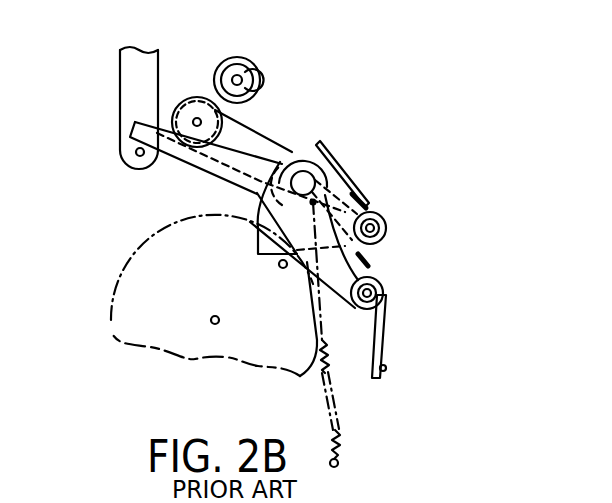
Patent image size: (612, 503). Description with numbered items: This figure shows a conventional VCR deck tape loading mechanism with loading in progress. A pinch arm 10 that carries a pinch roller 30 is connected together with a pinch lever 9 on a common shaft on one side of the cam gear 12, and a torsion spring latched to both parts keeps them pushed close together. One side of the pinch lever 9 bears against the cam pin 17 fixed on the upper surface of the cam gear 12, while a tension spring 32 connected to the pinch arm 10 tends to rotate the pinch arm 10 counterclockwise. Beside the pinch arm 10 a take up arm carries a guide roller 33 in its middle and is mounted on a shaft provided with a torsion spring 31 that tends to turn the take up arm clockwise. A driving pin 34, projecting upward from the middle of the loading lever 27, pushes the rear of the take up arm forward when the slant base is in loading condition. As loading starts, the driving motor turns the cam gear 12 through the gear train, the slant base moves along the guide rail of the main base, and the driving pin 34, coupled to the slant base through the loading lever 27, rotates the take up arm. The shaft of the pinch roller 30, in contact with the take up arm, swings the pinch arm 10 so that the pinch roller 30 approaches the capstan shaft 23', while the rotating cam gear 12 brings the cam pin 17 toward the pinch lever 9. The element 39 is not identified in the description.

The pinch lever 9 is at (267, 222).
The pinch arm 10 is at (268, 146).
The cam gear 12 is at (135, 292).
The cam pin 17 is at (283, 269).
The capstan shaft 23' is at (271, 62).
The loading lever 27 is at (125, 92).
The pinch roller 30 is at (197, 96).
The torsion spring 31 is at (326, 147).
The tension spring 32 is at (337, 442).
The guide roller 33 is at (306, 184).
The driving pin 34 is at (130, 166).
The strip 39 is at (386, 336).